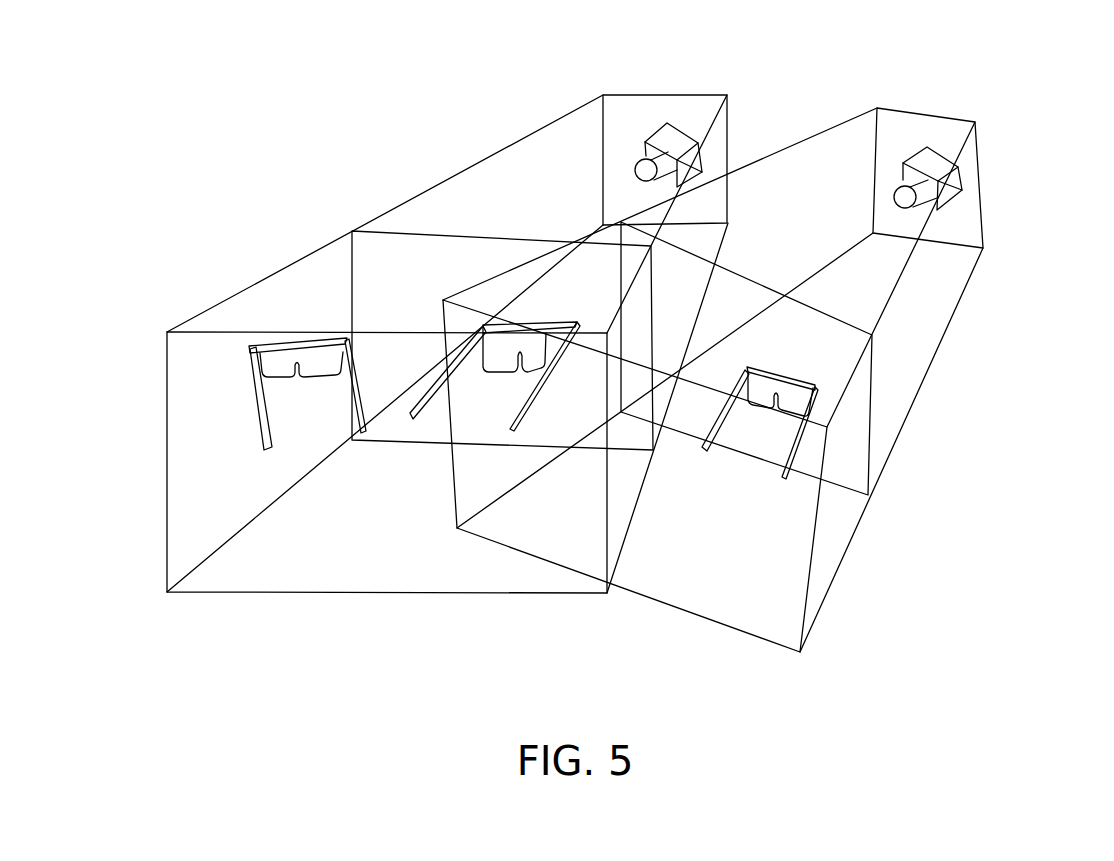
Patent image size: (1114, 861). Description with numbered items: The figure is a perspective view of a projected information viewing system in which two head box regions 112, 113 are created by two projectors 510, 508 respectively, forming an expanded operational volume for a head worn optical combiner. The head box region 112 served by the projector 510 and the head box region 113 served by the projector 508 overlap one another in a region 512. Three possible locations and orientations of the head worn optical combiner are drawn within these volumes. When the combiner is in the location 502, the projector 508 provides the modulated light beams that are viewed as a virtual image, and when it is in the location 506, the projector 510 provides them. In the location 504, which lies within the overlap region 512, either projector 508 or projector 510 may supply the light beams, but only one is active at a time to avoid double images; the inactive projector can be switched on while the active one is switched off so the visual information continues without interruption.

The head box region 112 is at (842, 527).
The head box region 113 is at (200, 492).
The location 502 is at (268, 342).
The location 504 is at (447, 333).
The location 506 is at (815, 402).
The projector 508 is at (680, 123).
The projector 510 is at (935, 152).
The overlap region 512 is at (572, 505).